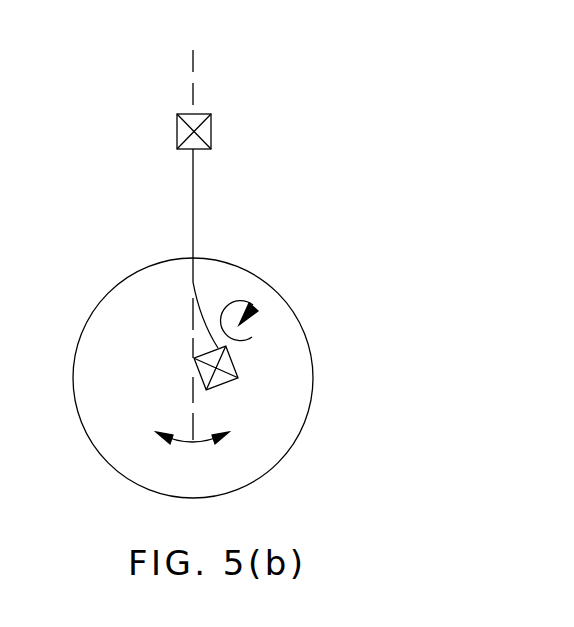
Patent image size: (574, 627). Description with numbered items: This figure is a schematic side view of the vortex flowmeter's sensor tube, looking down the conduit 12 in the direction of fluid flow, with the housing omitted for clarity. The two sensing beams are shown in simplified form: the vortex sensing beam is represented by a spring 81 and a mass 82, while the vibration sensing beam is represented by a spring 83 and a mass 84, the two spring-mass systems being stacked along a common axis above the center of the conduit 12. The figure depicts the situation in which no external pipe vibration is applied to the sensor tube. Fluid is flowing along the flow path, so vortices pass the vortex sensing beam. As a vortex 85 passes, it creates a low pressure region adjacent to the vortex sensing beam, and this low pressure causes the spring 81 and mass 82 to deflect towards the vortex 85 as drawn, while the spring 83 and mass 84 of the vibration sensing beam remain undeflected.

The conduit 12 is at (312, 393).
The spring 81 is at (193, 282).
The mass 82 is at (236, 360).
The spring 83 is at (193, 193).
The mass 84 is at (211, 131).
The vortex 85 is at (256, 307).